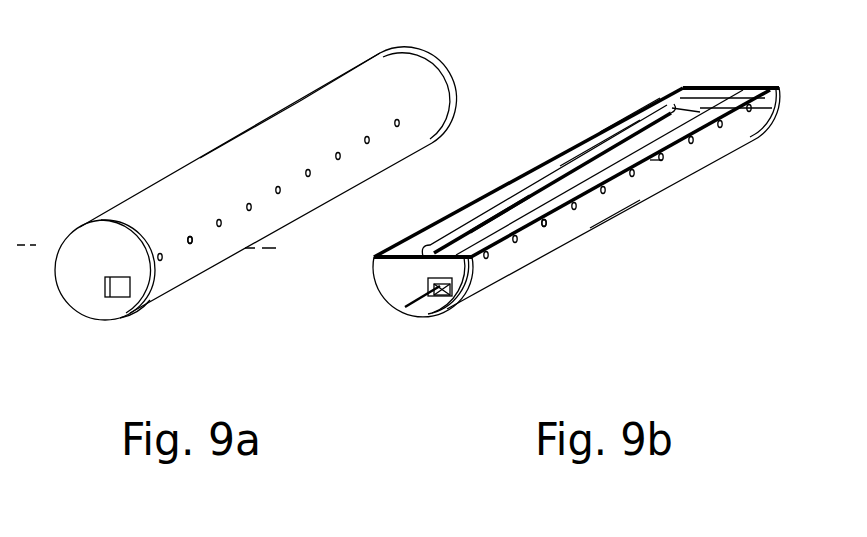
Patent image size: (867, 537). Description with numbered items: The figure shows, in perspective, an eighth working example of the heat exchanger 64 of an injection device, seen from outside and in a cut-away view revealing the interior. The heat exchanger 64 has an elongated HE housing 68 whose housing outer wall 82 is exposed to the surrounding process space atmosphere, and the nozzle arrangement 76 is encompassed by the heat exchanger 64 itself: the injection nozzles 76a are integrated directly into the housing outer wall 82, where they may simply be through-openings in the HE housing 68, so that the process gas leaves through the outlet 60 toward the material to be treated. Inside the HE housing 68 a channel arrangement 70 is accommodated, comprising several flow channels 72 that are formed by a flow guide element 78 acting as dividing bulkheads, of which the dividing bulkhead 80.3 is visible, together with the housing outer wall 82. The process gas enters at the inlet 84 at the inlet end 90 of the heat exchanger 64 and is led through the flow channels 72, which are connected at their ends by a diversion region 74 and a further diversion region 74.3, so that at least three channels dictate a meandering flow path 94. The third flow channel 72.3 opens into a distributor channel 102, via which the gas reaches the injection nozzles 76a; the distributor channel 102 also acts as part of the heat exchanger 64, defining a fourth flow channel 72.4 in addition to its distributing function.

In FIG. 9B, the outlet 60 is at (545, 224).
In FIG. 9A, the heat exchanger 64 is at (225, 110).
In FIG. 9B, the heat exchanger 64 is at (617, 110).
In FIG. 9A, the HE housing 68 is at (330, 87).
In FIG. 9B, the channel arrangement 70 is at (641, 118).
In FIG. 9B, the flow channels 72 is at (547, 181).
In FIG. 9B, the third flow channel 72.3 is at (496, 206).
In FIG. 9B, the fourth flow channel 72.4 is at (740, 135).
In FIG. 9B, the diversion region 74 is at (693, 89).
In FIG. 9B, the diversion region 74.3 is at (745, 89).
In FIG. 9A, the nozzle arrangement 76 is at (311, 183).
In FIG. 9B, the nozzle arrangement 76 is at (684, 171).
In FIG. 9A, the injection nozzles 76a is at (190, 239).
In FIG. 9B, the injection nozzles 76a is at (542, 224).
In FIG. 9B, the flow guide element 78 is at (535, 190).
In FIG. 9B, the dividing bulkhead 80.3 is at (600, 160).
In FIG. 9A, the housing outer wall 82 is at (313, 94).
In FIG. 9A, the inlet 84 is at (131, 288).
In FIG. 9A, the inlet end 90 is at (137, 320).
In FIG. 9B, the inlet end 90 is at (452, 318).
In FIG. 9B, the meandering flow path 94 is at (447, 219).
In FIG. 9B, the distributor channel 102 is at (613, 178).